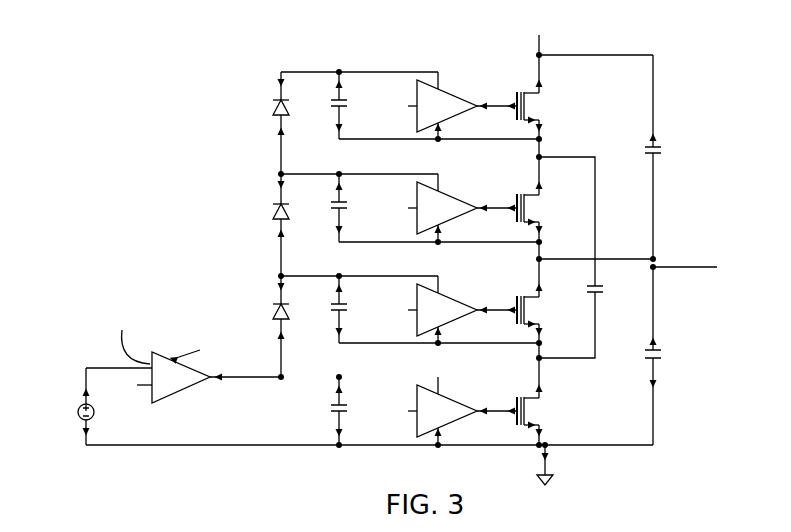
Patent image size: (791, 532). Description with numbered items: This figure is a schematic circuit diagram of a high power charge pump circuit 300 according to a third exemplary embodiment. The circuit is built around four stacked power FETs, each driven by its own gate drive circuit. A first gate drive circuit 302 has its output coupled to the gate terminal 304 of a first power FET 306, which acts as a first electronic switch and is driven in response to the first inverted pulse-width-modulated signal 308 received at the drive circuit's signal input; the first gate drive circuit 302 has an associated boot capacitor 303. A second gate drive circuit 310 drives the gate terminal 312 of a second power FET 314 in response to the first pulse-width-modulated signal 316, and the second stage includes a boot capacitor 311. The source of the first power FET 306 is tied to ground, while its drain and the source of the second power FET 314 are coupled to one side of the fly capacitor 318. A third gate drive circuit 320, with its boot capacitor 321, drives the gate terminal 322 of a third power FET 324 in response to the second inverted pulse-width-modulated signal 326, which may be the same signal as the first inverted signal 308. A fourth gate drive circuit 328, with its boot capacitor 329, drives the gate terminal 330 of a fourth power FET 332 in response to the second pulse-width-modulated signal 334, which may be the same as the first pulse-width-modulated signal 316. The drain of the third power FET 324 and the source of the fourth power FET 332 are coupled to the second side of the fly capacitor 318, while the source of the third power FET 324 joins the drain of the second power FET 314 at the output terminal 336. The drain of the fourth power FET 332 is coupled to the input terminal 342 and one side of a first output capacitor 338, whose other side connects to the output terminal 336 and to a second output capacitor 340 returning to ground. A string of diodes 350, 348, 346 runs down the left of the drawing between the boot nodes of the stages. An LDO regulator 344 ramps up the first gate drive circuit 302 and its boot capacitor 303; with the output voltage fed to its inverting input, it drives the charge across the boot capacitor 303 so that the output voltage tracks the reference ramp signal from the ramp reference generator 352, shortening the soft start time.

The high power charge pump circuit 300 is at (168, 43).
The first gate drive circuit 302 is at (453, 399).
The boot capacitor 303 is at (346, 405).
The gate terminal 304 is at (515, 397).
The first power FET 306 is at (543, 399).
The first PWMN signal 308 is at (384, 425).
The second gate drive circuit 310 is at (453, 298).
The bootstrap capacitor 311 is at (346, 303).
The gate terminal 312 is at (515, 296).
The second power FET 314 is at (543, 298).
The first PWM signal 316 is at (384, 322).
The fly capacitor 318 is at (598, 289).
The third gate drive circuit 320 is at (453, 196).
The bootstrap capacitor 321 is at (346, 202).
The gate terminal 322 is at (515, 194).
The third power FET 324 is at (543, 196).
The second PWMN signal 326 is at (384, 220).
The fourth gate drive circuit 328 is at (453, 93).
The bootstrap capacitor 329 is at (346, 100).
The gate terminal 330 is at (515, 92).
The fourth power FET 332 is at (543, 94).
The second PWM signal 334 is at (384, 118).
The output terminal 336 is at (656, 268).
The first output capacitor 338 is at (656, 147).
The second output capacitor 340 is at (656, 350).
The input terminal 342 is at (542, 54).
The LDO regulator 344 is at (130, 290).
The diode D2 346 is at (270, 303).
The diode D3 348 is at (270, 203).
The diode D4 350 is at (270, 100).
The ramp reference generator 352 is at (78, 415).